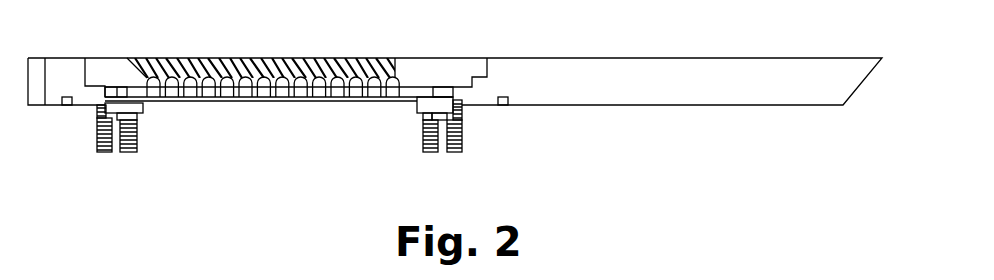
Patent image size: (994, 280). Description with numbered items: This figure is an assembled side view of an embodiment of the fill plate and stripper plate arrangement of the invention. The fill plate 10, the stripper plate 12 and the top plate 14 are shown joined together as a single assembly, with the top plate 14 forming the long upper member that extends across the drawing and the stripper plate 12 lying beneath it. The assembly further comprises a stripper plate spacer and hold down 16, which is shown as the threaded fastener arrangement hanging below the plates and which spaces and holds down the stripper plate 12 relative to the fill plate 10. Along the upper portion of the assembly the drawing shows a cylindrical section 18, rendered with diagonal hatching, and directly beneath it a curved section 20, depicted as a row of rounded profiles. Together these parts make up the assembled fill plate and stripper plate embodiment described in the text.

The fill plate 10 is at (103, 63).
The stripper plate 12 is at (390, 103).
The top plate 14 is at (68, 62).
The stripper plate spacer and hold down 16 is at (142, 106).
The cylindrical section 18 is at (392, 61).
The curved section 20 is at (280, 80).